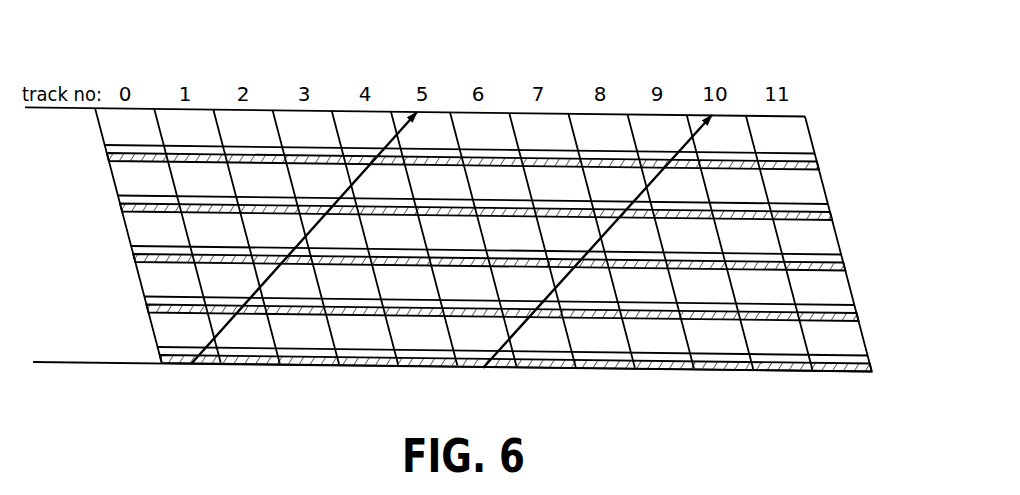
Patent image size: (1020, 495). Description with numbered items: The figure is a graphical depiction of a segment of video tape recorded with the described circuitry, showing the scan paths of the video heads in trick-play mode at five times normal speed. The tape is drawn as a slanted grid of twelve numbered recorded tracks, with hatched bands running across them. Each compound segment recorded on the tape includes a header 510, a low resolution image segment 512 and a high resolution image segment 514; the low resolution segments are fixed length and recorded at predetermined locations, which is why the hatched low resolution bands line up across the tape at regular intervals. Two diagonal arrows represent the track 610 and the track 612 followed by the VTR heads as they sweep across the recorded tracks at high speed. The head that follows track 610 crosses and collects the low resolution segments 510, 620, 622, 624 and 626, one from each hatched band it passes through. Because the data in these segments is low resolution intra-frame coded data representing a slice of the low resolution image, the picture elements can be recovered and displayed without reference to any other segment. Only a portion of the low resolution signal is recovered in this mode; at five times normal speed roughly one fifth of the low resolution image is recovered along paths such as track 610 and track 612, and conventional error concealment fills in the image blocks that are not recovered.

The header 510 is at (160, 358).
The low resolution image segment 512 is at (158, 348).
The high resolution image segment 514 is at (148, 322).
The track 610 is at (213, 364).
The track 612 is at (516, 336).
The low resolution segment 620 is at (222, 304).
The low resolution segment 622 is at (263, 254).
The low resolution segment 624 is at (304, 203).
The low resolution segment 626 is at (347, 152).